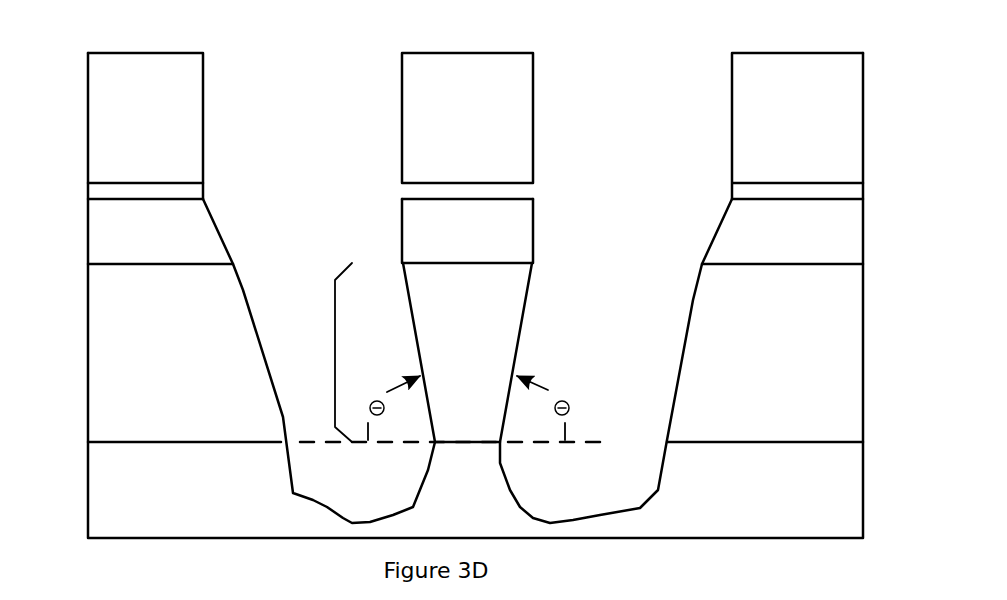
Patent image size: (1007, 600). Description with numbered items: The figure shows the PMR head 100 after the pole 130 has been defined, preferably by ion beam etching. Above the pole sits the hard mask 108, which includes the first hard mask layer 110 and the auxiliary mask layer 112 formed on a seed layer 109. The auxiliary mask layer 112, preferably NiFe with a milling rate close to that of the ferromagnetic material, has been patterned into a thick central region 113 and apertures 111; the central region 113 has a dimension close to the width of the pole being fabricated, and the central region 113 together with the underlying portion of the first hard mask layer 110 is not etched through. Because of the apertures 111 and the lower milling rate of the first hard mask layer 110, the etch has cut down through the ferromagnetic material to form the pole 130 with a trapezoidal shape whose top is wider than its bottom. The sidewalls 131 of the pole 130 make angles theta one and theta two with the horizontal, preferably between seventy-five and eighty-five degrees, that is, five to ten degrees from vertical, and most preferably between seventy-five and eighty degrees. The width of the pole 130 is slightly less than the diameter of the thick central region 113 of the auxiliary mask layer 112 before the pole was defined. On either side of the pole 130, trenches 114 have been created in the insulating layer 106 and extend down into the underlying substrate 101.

The PMR head 100 is at (413, 31).
The substrate 101 is at (88, 507).
The insulating layer 106 is at (88, 410).
The hard mask 108 is at (73, 53).
The seed layer 109 is at (203, 192).
The first hard mask layer 110 is at (218, 220).
The apertures 111 is at (267, 83).
The auxiliary mask layer 112 is at (203, 118).
The central region 113 is at (398, 160).
The trenches 114 is at (320, 276).
The pole 130 is at (335, 353).
The sidewalls 131 is at (417, 350).